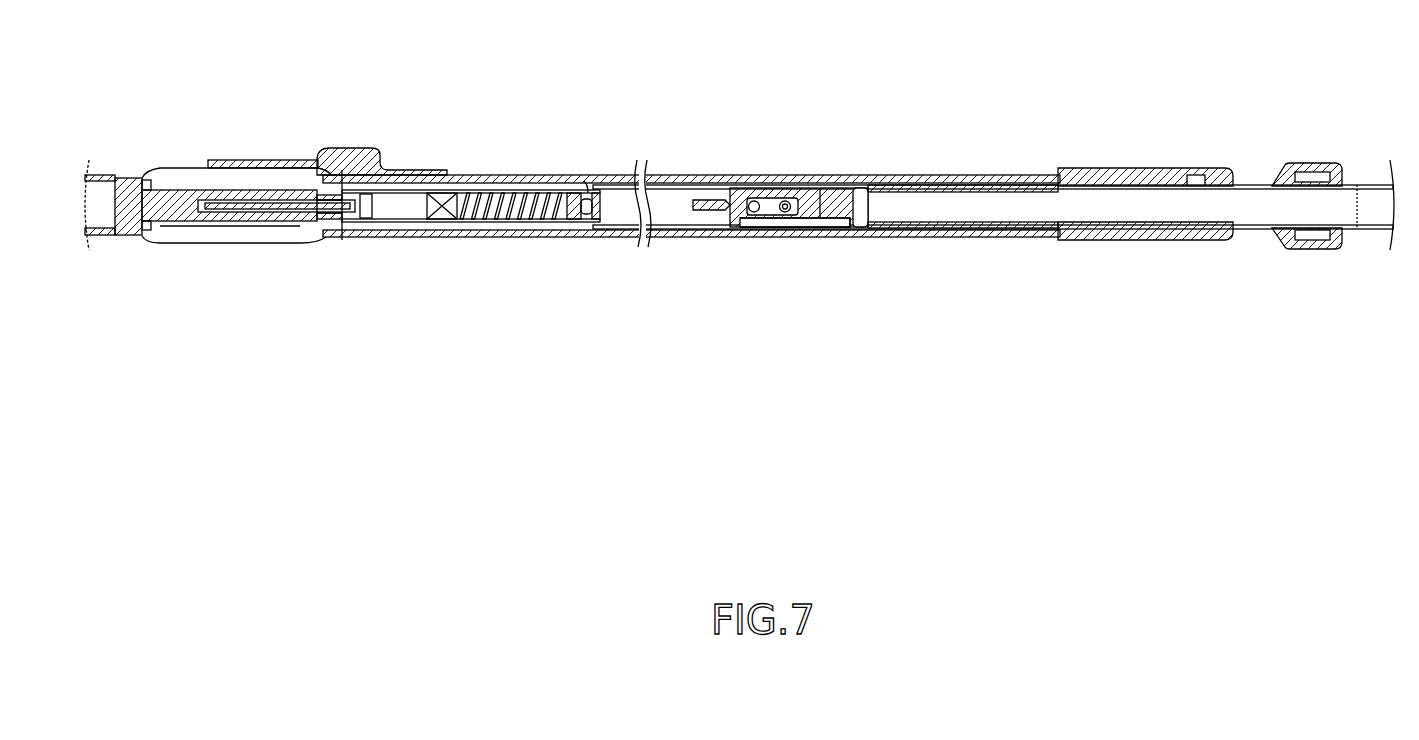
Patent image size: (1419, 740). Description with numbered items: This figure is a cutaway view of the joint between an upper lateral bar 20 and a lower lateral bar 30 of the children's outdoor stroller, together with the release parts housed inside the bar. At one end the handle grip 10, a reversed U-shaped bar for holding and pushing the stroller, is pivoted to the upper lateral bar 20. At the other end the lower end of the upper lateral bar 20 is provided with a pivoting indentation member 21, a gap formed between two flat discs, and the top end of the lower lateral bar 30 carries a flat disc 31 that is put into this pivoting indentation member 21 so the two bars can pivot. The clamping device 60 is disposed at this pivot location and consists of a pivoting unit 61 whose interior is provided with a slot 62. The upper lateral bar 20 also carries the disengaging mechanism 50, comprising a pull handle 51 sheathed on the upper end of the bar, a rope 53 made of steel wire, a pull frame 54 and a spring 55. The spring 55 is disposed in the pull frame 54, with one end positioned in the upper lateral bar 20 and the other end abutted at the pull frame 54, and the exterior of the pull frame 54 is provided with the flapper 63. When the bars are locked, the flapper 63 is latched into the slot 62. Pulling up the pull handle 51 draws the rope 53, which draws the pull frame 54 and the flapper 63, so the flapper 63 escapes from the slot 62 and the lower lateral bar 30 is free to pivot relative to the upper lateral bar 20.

The handle grip 10 is at (1387, 185).
The upper lateral bar 20 is at (793, 177).
The pivoting indentation member 21 is at (158, 235).
The lower lateral bar 30 is at (108, 235).
The flat disc 31 is at (300, 222).
The disengaging mechanism 50 is at (1217, 263).
The pull handle 51 is at (1172, 240).
The rope 53 is at (672, 181).
The pull frame 54 is at (570, 192).
The spring 55 is at (515, 192).
The clamping device 60 is at (167, 170).
The pivoting unit 61 is at (262, 224).
The slot 62 is at (203, 205).
The flapper 63 is at (327, 205).